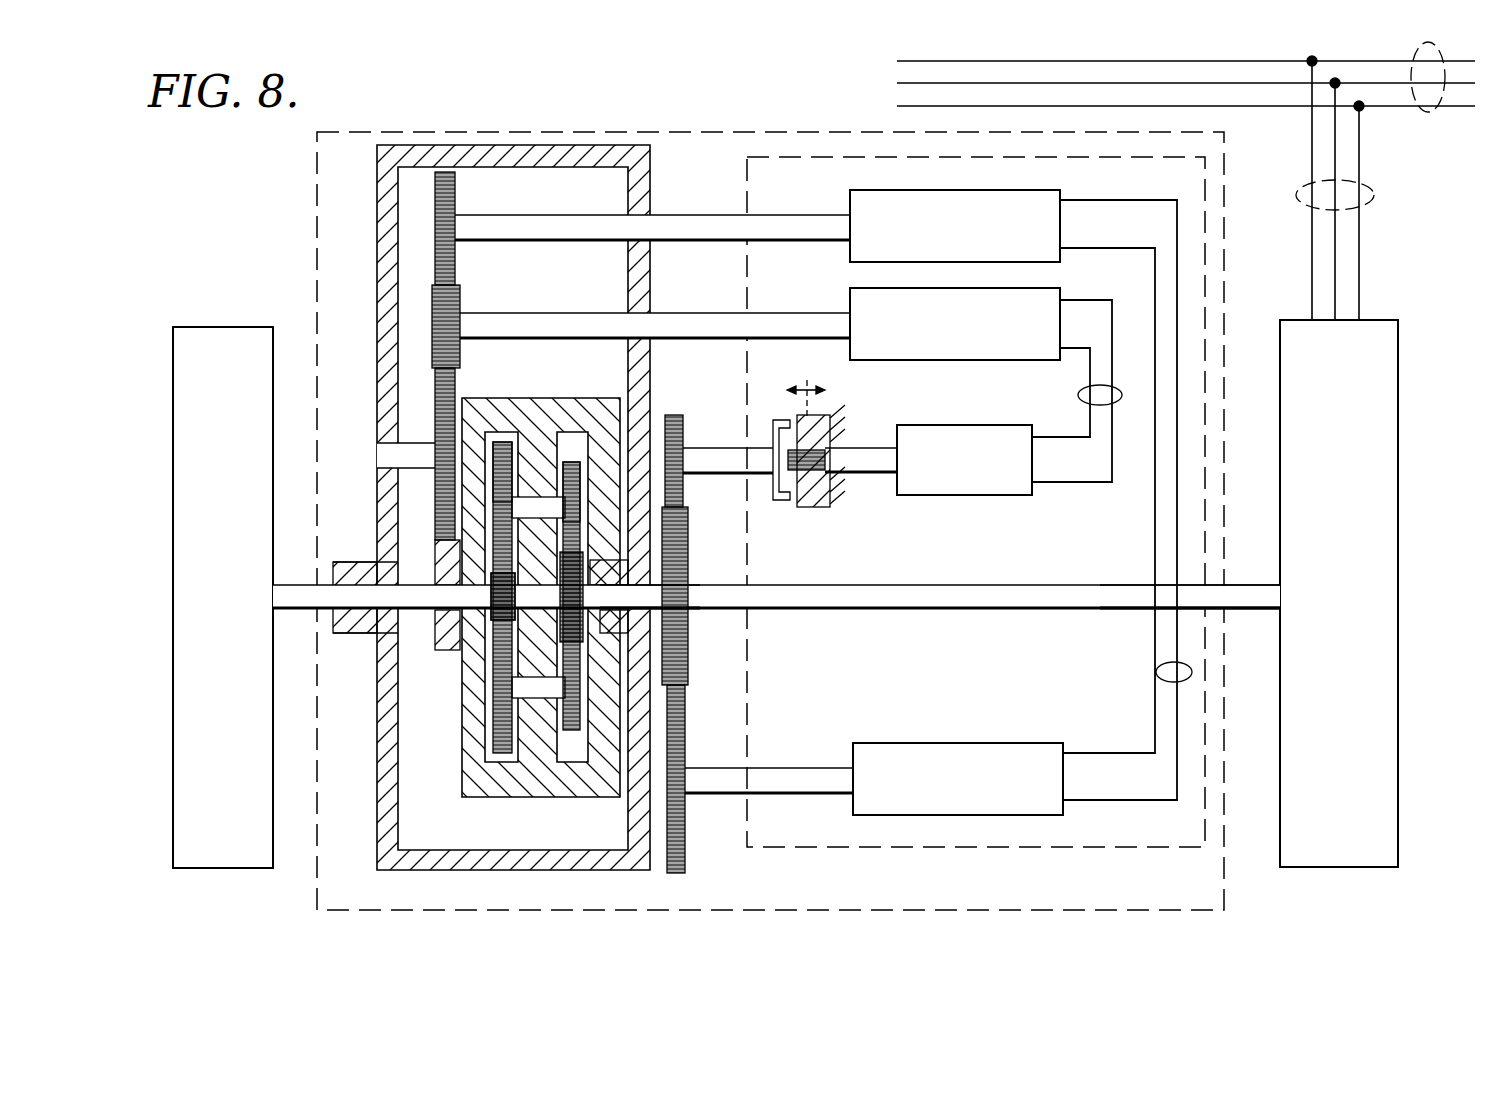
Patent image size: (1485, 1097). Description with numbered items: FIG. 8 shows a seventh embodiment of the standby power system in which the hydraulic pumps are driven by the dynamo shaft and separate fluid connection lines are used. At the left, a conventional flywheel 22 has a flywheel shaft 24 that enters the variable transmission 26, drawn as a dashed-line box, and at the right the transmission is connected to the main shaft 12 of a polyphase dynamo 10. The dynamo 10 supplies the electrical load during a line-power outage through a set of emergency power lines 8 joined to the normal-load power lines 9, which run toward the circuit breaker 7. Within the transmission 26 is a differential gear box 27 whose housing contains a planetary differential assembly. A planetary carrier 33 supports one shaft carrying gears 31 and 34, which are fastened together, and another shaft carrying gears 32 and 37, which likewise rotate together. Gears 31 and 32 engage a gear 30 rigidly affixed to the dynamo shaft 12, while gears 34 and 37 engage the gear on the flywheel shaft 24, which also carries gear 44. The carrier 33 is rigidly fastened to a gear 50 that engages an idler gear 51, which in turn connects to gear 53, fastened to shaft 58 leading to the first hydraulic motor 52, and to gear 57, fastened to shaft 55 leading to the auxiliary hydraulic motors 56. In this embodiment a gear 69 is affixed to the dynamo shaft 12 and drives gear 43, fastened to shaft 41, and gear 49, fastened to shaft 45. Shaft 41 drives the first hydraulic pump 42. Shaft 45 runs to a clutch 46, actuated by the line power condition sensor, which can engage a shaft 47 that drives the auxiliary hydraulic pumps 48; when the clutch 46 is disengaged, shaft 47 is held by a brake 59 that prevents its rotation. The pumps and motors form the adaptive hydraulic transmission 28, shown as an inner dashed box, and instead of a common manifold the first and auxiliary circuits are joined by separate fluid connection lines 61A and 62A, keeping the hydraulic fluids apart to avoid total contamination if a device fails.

The circuit breaker 7 is at (893, 55).
The emergency power lines 8 is at (1372, 190).
The power lines 9 is at (1428, 112).
The polyphase dynamo 10 is at (1380, 395).
The main shaft 12 is at (1243, 585).
The flywheel 22 is at (222, 327).
The flywheel shaft 24 is at (300, 585).
The variable transmission 26 is at (652, 132).
The differential gear box 27 is at (380, 803).
The adaptive hydraulic transmission 28 is at (967, 847).
The gear 30 is at (600, 572).
The gear 31 is at (573, 462).
The gear 32 is at (572, 730).
The planetary carrier 33 is at (550, 400).
The gear 34 is at (505, 442).
The gear 37 is at (505, 753).
The shaft 41 is at (812, 780).
The first hydraulic pump 42 is at (930, 743).
The gear 43 is at (690, 835).
The gear 44 is at (463, 627).
The shaft 45 is at (722, 448).
The clutch 46 is at (775, 420).
The shaft 47 is at (870, 472).
The auxiliary hydraulic pumps 48 is at (945, 495).
The gear 49 is at (683, 487).
The gear 50 is at (443, 640).
The idler gear 51 is at (440, 397).
The first hydraulic motor 52 is at (1040, 190).
The gear 53 is at (455, 185).
The shaft 55 is at (730, 328).
The auxiliary hydraulic motors 56 is at (924, 360).
The gear 57 is at (460, 297).
The shaft 58 is at (733, 230).
The brake 59 is at (808, 507).
The fluid connection lines 61A is at (1157, 672).
The fluid connection lines 62A is at (1085, 395).
The gear 69 is at (690, 637).